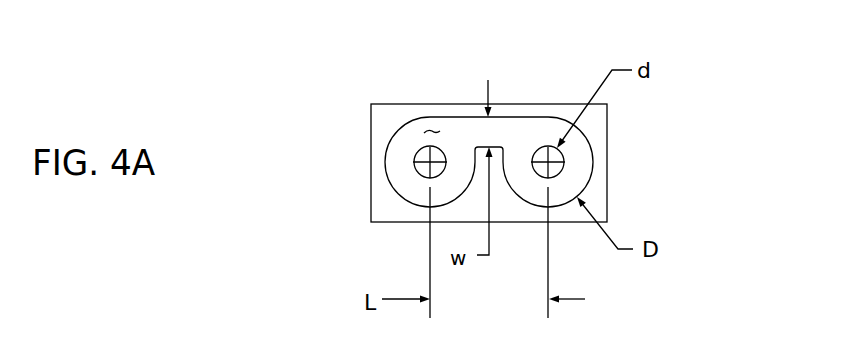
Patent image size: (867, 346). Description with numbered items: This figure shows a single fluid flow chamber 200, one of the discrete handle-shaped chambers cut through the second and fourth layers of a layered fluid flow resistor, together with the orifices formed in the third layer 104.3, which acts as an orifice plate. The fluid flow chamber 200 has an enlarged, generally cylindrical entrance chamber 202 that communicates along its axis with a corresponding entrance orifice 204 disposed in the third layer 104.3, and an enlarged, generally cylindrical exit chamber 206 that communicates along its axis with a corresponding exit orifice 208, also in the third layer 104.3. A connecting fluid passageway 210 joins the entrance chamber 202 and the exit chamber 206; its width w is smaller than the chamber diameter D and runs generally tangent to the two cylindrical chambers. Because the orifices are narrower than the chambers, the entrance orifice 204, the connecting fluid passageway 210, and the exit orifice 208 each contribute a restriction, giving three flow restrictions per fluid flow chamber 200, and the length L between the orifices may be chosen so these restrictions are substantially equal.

The fluid flow chamber 200 is at (570, 70).
The entrance chamber 202 is at (386, 177).
The entrance orifice 204 is at (415, 145).
The exit chamber 206 is at (593, 170).
The exit orifice 208 is at (562, 157).
The connecting fluid passageway 210 is at (505, 117).
The third layer 104.3 is at (432, 129).